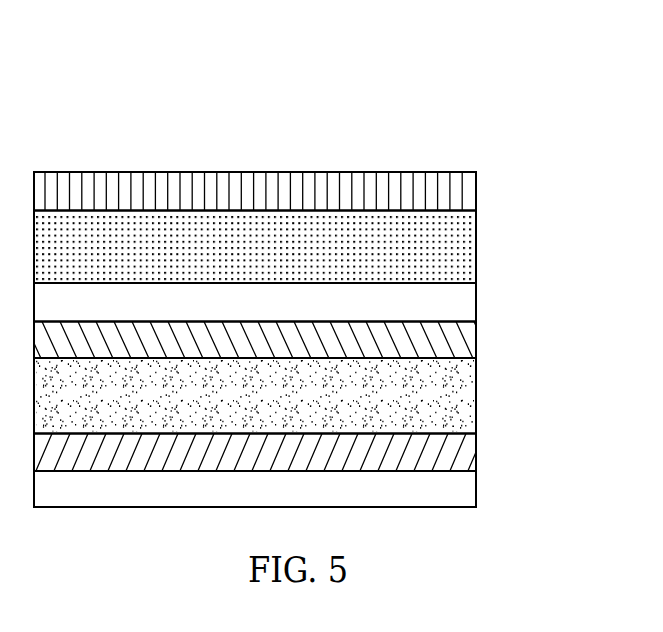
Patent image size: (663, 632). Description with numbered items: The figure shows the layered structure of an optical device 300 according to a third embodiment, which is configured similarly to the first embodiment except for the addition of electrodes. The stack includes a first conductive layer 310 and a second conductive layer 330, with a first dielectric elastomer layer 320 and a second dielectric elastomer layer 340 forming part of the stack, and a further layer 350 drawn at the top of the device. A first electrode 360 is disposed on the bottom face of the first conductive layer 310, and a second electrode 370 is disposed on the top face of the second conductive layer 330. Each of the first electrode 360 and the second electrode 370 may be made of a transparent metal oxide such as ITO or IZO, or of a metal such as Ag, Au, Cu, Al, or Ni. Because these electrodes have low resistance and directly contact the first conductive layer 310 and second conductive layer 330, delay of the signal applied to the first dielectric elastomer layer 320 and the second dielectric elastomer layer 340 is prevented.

The optical device 300 is at (422, 120).
The first conductive layer 310 is at (470, 450).
The first dielectric elastomer layer 320 is at (470, 398).
The second conductive layer 330 is at (470, 345).
The second dielectric elastomer layer 340 is at (470, 250).
The top electrode layer with vertical structures 350 is at (470, 192).
The first electrode 360 is at (470, 487).
The second electrode 370 is at (470, 302).